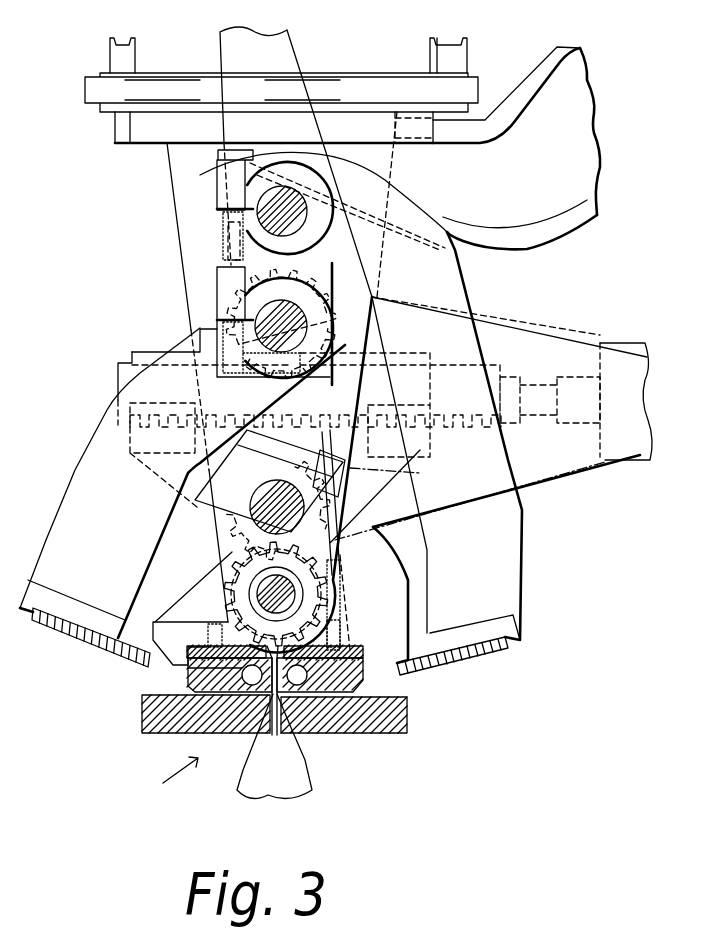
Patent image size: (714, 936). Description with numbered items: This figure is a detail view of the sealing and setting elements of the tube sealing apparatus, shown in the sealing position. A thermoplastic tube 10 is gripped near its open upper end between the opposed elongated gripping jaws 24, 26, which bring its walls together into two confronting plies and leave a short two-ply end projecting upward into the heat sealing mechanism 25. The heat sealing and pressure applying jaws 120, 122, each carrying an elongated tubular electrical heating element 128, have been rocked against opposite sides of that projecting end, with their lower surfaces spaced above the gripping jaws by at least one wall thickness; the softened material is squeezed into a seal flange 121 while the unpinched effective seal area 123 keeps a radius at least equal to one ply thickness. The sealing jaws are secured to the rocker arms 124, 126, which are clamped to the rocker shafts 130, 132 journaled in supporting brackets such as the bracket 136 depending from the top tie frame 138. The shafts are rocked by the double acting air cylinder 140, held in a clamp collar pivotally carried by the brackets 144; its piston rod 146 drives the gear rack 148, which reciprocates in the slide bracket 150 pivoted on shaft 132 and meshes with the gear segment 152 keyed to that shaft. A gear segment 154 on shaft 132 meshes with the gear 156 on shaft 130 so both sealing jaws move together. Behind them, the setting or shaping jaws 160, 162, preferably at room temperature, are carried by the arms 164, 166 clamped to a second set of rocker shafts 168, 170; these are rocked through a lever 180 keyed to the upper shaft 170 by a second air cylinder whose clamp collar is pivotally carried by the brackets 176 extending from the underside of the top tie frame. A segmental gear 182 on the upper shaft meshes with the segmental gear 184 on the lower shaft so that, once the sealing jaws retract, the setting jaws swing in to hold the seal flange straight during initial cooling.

The thermoplastic tube 10 is at (306, 776).
The gripping jaw 24 is at (142, 720).
The heat sealing mechanism 25 is at (163, 779).
The gripping jaw 26 is at (407, 722).
The heat sealing and pressure applying jaw 120 is at (190, 672).
The seal flange 121 is at (300, 694).
The heat sealing and pressure applying jaw 122 is at (357, 685).
The effective seal area 123 is at (275, 700).
The rocker arm 124 is at (190, 605).
The rocker arm 126 is at (410, 592).
The tubular electrical heating element 128 is at (208, 640).
The rocker shaft 130 is at (258, 583).
The rocker shaft 132 is at (255, 508).
The supporting bracket 136 is at (180, 223).
The top tie frame 138 is at (149, 77).
The air cylinder 140 is at (627, 343).
The bracket 144 is at (520, 325).
The piston rod 146 is at (540, 383).
The gear rack 148 is at (118, 378).
The slide bracket 150 is at (148, 352).
The gear segment 152 is at (470, 501).
The gear segment 154 is at (338, 552).
The gear 156 is at (332, 594).
The setting jaw 160 is at (110, 651).
The setting jaw 162 is at (478, 661).
The arm 164 is at (76, 467).
The arm 166 is at (518, 548).
The rocker shaft 168 is at (263, 303).
The rocker shaft 170 is at (257, 200).
The bracket 176 is at (577, 227).
The lever 180 is at (292, 36).
The segmental gear 182 is at (306, 263).
The segmental gear 184 is at (300, 272).